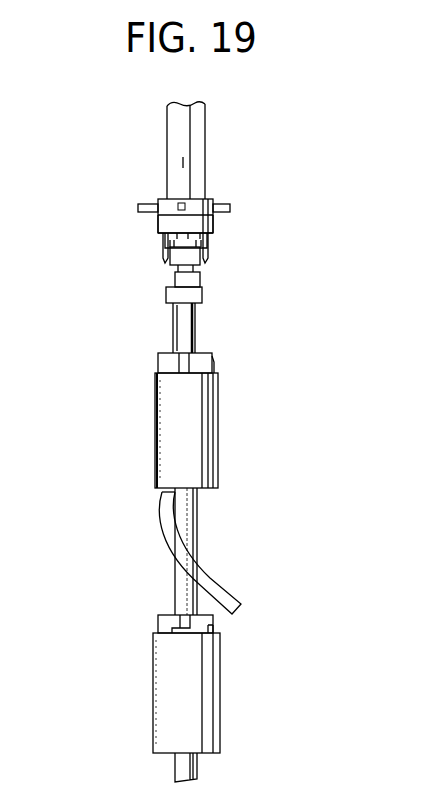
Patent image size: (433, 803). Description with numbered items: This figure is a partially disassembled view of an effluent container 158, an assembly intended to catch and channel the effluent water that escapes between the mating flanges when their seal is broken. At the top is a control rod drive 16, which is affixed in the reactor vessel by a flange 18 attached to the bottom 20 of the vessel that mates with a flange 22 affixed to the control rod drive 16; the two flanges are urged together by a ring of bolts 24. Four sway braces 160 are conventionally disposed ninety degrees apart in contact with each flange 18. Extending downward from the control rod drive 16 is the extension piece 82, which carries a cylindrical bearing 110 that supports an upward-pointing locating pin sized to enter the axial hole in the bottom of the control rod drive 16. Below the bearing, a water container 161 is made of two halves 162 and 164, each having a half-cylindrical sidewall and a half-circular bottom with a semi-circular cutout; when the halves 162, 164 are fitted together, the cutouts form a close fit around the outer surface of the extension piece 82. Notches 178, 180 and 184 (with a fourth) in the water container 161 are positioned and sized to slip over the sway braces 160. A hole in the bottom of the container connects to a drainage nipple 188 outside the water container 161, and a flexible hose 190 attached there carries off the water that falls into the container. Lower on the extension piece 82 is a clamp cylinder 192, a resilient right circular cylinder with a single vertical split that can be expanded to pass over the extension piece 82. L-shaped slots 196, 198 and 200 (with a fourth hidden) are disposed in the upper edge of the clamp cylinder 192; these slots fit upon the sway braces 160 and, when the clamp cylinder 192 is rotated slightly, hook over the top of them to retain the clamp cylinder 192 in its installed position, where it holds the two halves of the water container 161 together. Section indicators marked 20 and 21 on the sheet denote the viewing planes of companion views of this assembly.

The control rod drive 16 is at (170, 153).
The flange 18 is at (213, 199).
The sway braces 160 is at (151, 203).
The flange 22 is at (215, 226).
The bolts 24 is at (165, 242).
The cylindrical bearing 110 is at (197, 287).
The notch 178 is at (195, 350).
The notch 180 is at (158, 355).
The half 162 is at (157, 462).
The half 164 is at (218, 445).
The notch 184 is at (214, 362).
The water container 161 is at (237, 473).
The effluent container 158 is at (333, 485).
The extension piece 82 is at (195, 542).
The flexible hose 190 is at (230, 588).
The drainage nipple 188 is at (163, 494).
The L-shaped slot 198 is at (158, 626).
The L-shaped slot 196 is at (178, 635).
The L-shaped slot 200 is at (215, 620).
The clamp cylinder 192 is at (218, 665).
The bottom 20 is at (63, 362).
The section line 21 is at (45, 682).